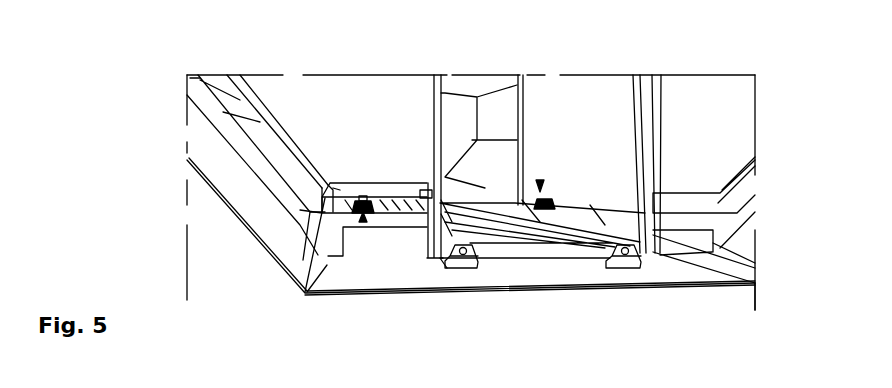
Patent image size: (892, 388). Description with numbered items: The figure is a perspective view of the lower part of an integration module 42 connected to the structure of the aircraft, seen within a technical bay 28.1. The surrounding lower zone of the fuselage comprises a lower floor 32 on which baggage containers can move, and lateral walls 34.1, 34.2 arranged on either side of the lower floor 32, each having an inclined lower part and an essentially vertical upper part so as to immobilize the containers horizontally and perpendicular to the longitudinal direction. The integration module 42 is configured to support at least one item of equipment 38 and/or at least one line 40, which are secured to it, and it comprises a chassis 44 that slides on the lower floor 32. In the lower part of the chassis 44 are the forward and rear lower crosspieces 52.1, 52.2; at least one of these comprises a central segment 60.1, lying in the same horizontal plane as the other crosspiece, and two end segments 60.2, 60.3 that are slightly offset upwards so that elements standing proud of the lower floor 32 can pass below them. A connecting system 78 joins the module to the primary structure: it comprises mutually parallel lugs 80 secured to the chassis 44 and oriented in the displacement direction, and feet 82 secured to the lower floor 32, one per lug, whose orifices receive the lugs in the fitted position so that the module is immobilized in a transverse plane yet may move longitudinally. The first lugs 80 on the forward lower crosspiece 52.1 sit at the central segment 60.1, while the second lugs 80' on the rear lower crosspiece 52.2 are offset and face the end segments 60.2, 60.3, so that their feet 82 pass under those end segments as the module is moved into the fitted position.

The technical bay 28.1 is at (343, 275).
The lower floor 32 is at (569, 283).
The lateral wall 34.1 is at (745, 244).
The lateral wall 34.2 is at (238, 184).
The item of equipment 38 is at (316, 108).
The line 40 is at (710, 103).
The integration module 42 is at (755, 293).
The chassis 44 is at (228, 135).
The forward lower crosspiece 52.1 is at (508, 262).
The rear lower crosspiece 52.2 is at (470, 200).
The central segment 60.1 is at (535, 248).
The end segment 60.2 is at (692, 222).
The end segment 60.3 is at (328, 256).
The connecting system 78 is at (540, 185).
The lug 80 is at (614, 142).
The second lug 80' is at (486, 120).
The foot 82 is at (460, 270).